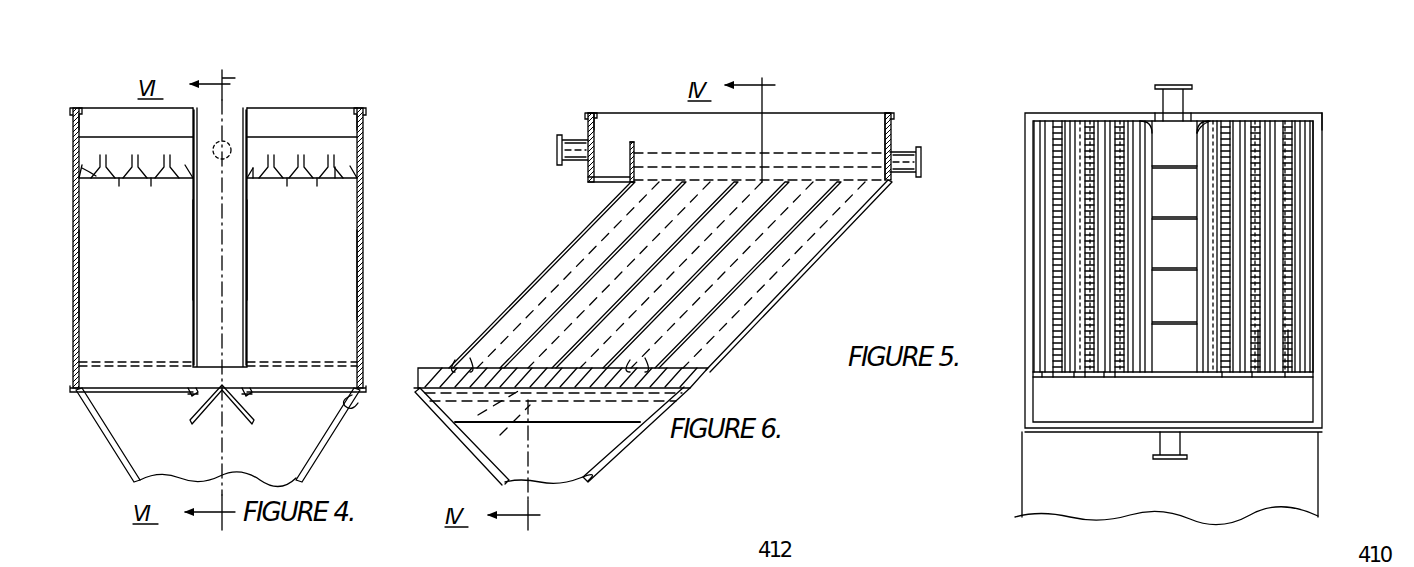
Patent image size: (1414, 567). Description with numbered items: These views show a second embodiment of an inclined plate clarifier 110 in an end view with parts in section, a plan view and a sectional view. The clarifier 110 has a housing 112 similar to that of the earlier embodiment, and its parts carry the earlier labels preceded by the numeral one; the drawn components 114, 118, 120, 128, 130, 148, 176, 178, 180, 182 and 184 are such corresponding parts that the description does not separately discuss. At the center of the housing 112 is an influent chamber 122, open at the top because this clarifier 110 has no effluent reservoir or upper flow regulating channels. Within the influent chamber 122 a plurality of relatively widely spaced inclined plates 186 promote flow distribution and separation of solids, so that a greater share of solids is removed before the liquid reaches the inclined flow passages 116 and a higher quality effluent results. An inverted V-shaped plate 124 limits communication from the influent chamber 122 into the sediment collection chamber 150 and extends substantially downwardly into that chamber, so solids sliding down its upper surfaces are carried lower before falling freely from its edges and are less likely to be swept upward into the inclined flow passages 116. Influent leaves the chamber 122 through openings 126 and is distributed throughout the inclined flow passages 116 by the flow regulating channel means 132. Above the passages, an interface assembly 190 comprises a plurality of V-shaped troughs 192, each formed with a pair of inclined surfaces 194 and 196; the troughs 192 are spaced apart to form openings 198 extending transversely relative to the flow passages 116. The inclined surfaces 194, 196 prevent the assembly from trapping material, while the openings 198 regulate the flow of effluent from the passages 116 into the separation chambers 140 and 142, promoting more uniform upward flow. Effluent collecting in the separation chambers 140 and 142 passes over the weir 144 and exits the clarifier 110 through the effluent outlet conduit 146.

In FIG. 4, the clarifier 110 is at (420, 142).
In FIG. 6, the clarifier 110 is at (424, 136).
In FIG. 5, the clarifier 110 is at (1332, 120).
In FIG. 4, the housing 112 is at (360, 110).
In FIG. 6, the housing 112 is at (614, 109).
In FIG. 5, the housing 112 is at (1028, 281).
In FIG. 4, the side wall 114 is at (366, 250).
In FIG. 5, the inclined flow passages 116 is at (1115, 180).
In FIG. 4, the gas passages 118 is at (144, 310).
In FIG. 5, the gas passages 118 is at (1048, 236).
In FIG. 4, the upper housing portion 120 is at (380, 152).
In FIG. 6, the upper housing portion 120 is at (583, 172).
In FIG. 4, the influent chamber 122 is at (232, 110).
In FIG. 6, the influent chamber 122 is at (850, 122).
In FIG. 5, the influent chamber 122 is at (1190, 200).
In FIG. 4, the inverted V-shaped plate 124 is at (193, 416).
In FIG. 6, the inverted V-shaped plate 124 is at (595, 424).
In FIG. 4, the openings 126 is at (190, 372).
In FIG. 6, the openings 126 is at (452, 368).
In FIG. 4, the left duct wall 128 is at (190, 240).
In FIG. 5, the left duct wall 128 is at (1194, 120).
In FIG. 4, the right duct wall 130 is at (249, 240).
In FIG. 5, the right duct wall 130 is at (1158, 116).
In FIG. 4, the flow regulating channel means 132 is at (330, 378).
In FIG. 6, the flow regulating channel means 132 is at (690, 380).
In FIG. 4, the separation chamber 140 is at (152, 134).
In FIG. 4, the separation chamber 142 is at (317, 134).
In FIG. 6, the weir 144 is at (634, 150).
In FIG. 5, the weir 144 is at (1165, 378).
In FIG. 6, the effluent outlet conduit 146 is at (556, 144).
In FIG. 5, the effluent outlet conduit 146 is at (1165, 455).
In FIG. 4, the hopper wall 148 is at (328, 454).
In FIG. 6, the hopper wall 148 is at (608, 462).
In FIG. 4, the sediment collection chamber 150 is at (280, 465).
In FIG. 6, the sediment collection chamber 150 is at (565, 477).
In FIG. 6, the outlet pipe 176 is at (922, 164).
In FIG. 5, the outlet pipe 176 is at (1160, 101).
In FIG. 4, the hopper side wall 178 is at (92, 415).
In FIG. 4, the hopper flange joint 180 is at (360, 408).
In FIG. 4, the support bracket 182 is at (190, 394).
In FIG. 6, the support bracket 182 is at (462, 430).
In FIG. 4, the support bracket 184 is at (250, 398).
In FIG. 6, the inclined plates 186 is at (700, 312).
In FIG. 4, the interface assembly 190 is at (368, 178).
In FIG. 5, the interface assembly 190 is at (1303, 250).
In FIG. 4, the V-shaped troughs 192 is at (156, 185).
In FIG. 6, the V-shaped troughs 192 is at (884, 190).
In FIG. 5, the V-shaped troughs 192 is at (1115, 338).
In FIG. 4, the inclined surface 194 is at (105, 178).
In FIG. 5, the inclined surface 194 is at (1050, 258).
In FIG. 4, the inclined surface 196 is at (300, 182).
In FIG. 5, the inclined surface 196 is at (1260, 352).
In FIG. 4, the openings 198 is at (103, 182).
In FIG. 5, the openings 198 is at (1113, 379).